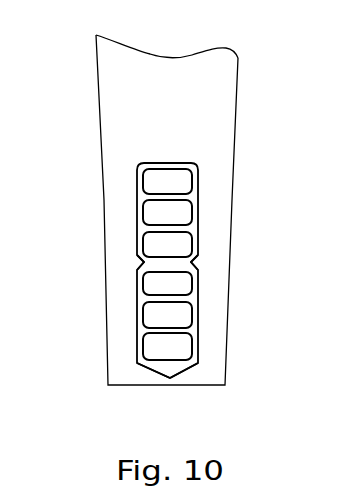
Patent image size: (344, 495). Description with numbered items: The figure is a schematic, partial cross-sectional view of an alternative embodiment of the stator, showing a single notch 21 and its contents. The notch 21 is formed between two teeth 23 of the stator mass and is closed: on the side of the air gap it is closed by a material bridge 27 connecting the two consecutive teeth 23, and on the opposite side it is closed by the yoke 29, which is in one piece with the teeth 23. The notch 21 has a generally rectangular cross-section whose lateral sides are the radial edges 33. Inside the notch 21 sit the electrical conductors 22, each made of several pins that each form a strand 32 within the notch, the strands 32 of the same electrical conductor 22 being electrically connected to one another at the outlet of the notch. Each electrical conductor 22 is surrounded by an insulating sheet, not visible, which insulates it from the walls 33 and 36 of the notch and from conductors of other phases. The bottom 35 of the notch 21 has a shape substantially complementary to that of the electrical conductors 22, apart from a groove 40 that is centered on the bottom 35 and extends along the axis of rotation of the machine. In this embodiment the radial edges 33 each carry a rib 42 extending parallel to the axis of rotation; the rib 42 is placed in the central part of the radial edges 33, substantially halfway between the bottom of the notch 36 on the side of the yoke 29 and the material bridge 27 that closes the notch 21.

The notch 21 is at (199, 197).
The electrical conductor 22 is at (199, 350).
The tooth 23 is at (111, 223).
The material bridge 27 is at (150, 366).
The yoke 29 is at (167, 210).
The strand 32 is at (137, 184).
The radial edge 33 is at (137, 233).
The bottom of the notch 35 is at (162, 373).
The wall of the notch 36 is at (160, 163).
The groove 40 is at (178, 373).
The rib 42 is at (137, 266).